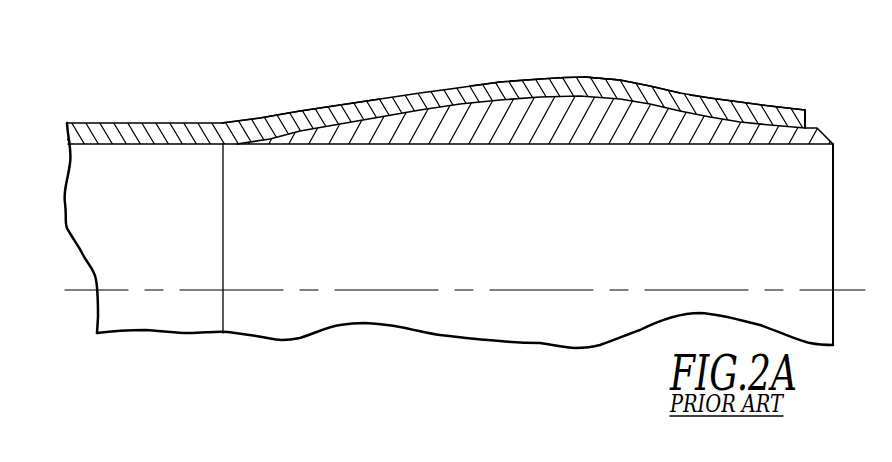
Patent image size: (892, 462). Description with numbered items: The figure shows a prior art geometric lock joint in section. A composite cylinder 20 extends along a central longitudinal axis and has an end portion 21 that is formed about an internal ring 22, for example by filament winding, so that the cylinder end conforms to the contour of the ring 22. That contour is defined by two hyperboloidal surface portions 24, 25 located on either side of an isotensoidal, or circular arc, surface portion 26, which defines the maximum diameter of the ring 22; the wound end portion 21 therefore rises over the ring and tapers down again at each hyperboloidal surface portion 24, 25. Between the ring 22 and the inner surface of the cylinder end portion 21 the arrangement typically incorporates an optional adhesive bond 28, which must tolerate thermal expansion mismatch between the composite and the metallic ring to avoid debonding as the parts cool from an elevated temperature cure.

The composite cylinder 20 is at (135, 122).
The end portion 21 is at (639, 67).
The internal ring 22 is at (440, 122).
The hyperboloidal surface portion 24 is at (337, 122).
The hyperboloidal surface portion 25 is at (720, 122).
The circular arc surface portion 26 is at (562, 78).
The adhesive bond 28 is at (517, 100).